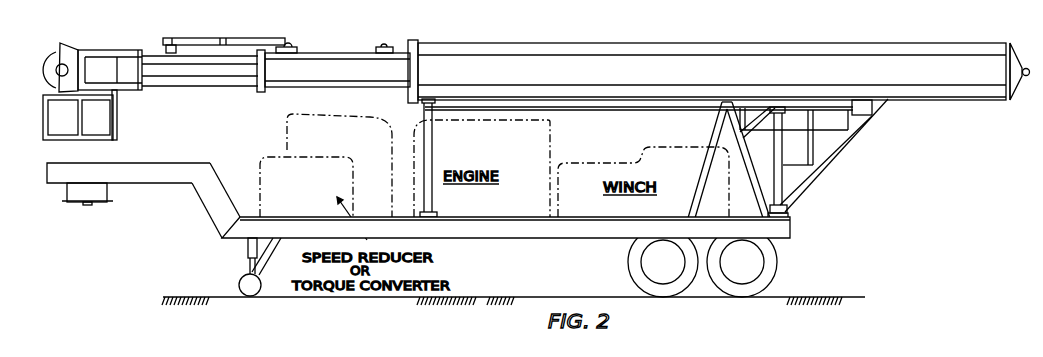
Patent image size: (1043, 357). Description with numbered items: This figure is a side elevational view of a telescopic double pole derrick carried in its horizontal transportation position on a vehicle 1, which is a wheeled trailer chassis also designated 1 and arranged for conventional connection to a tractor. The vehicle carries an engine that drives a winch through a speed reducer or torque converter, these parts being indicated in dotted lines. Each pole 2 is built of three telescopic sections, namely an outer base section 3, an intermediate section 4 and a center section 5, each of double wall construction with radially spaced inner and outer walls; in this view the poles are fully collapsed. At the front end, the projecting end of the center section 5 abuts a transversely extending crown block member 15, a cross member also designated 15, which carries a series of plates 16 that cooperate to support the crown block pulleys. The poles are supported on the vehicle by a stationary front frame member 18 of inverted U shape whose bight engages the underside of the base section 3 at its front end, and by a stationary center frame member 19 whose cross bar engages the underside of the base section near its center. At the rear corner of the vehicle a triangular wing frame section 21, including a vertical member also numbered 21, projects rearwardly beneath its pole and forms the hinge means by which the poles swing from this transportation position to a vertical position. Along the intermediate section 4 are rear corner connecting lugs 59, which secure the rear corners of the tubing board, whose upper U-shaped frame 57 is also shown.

The vehicle 1 is at (520, 230).
The pole 2 is at (562, 50).
The outer base section 3 is at (718, 79).
The intermediate section 4 is at (377, 70).
The center section 5 is at (203, 68).
The crown block member 15 is at (109, 79).
The plates 16 is at (73, 54).
The front frame member 18 is at (428, 132).
The center frame member 19 is at (713, 132).
The wing frame section 21 is at (773, 142).
The upper U-shaped frame 57 is at (207, 33).
The rear corner connecting lugs 59 is at (292, 48).